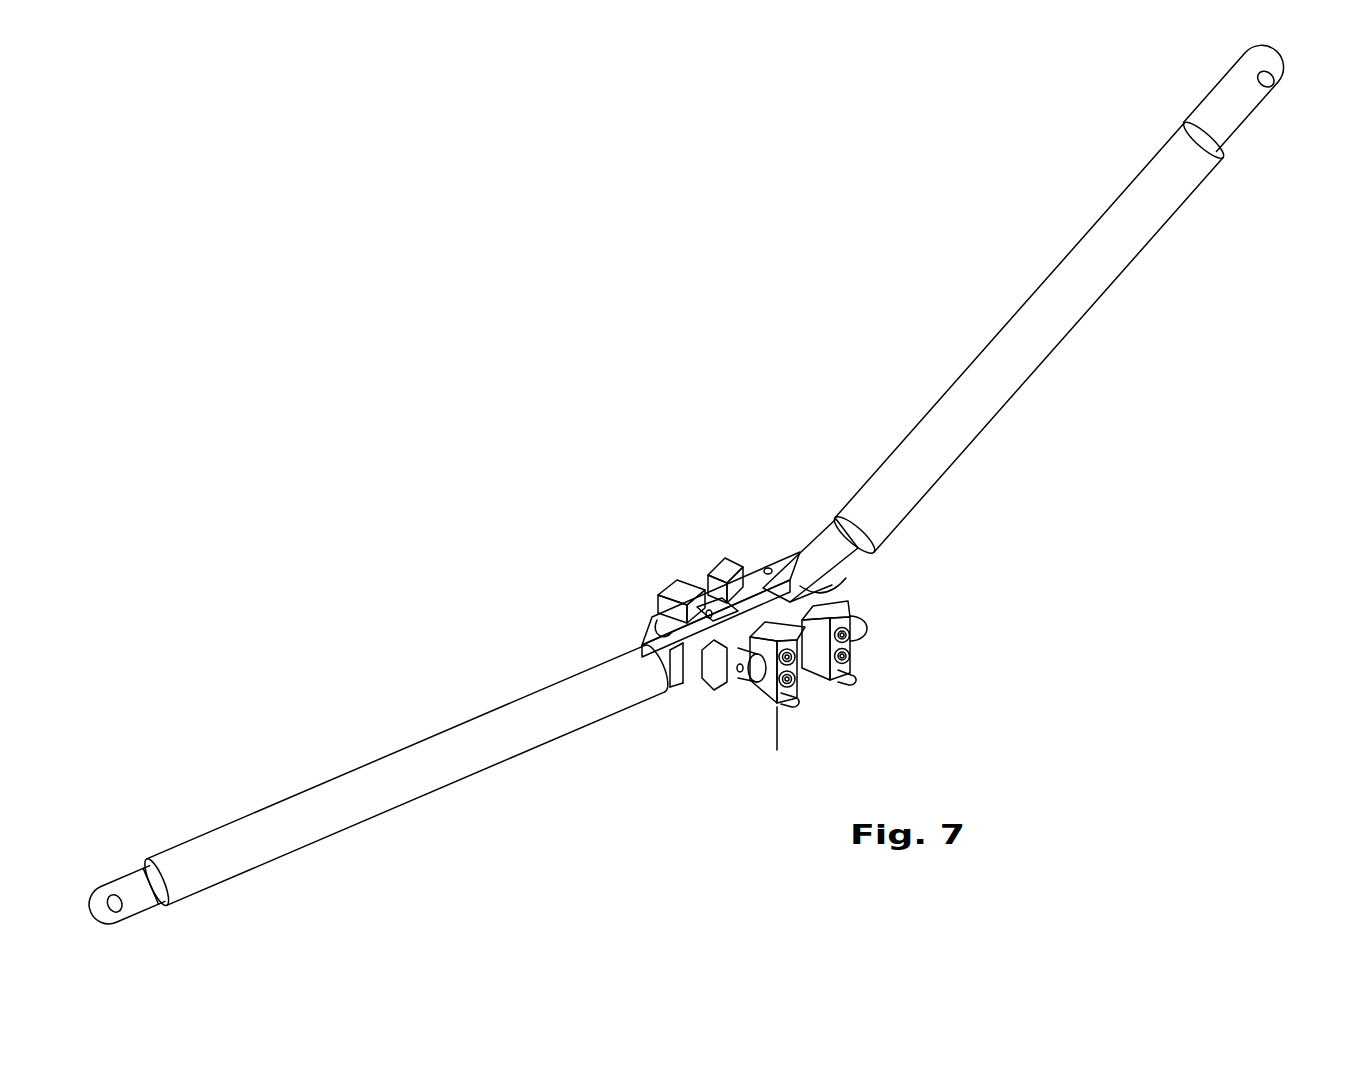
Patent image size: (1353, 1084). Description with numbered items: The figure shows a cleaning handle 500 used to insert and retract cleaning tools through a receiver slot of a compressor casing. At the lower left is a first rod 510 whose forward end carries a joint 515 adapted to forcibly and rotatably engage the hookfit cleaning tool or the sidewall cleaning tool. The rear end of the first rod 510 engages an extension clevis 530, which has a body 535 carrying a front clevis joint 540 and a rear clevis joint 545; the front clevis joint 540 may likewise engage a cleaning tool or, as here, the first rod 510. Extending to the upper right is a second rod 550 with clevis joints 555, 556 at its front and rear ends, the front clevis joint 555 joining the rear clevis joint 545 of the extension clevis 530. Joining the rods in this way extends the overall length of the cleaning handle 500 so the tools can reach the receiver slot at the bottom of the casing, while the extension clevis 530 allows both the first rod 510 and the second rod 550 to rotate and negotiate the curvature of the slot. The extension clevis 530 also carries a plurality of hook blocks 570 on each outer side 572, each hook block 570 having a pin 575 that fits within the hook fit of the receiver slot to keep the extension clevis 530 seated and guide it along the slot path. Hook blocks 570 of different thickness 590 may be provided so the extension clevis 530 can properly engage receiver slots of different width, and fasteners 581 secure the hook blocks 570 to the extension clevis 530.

The cleaning handle 500 is at (1075, 226).
The first rod 510 is at (447, 784).
The joint 515 is at (122, 900).
The extension clevis 530 is at (679, 555).
The body 535 is at (753, 600).
The front clevis joint 540 is at (670, 622).
The rear clevis joint 545 is at (791, 575).
The second rod 550 is at (1053, 350).
The clevis joint 555 is at (802, 587).
The clevis joint 556 is at (1277, 90).
The hook block 570 is at (668, 583).
The outer side 572 is at (765, 568).
The pin 575 is at (857, 673).
The fastener 581 is at (858, 648).
The thickness 590 is at (805, 757).